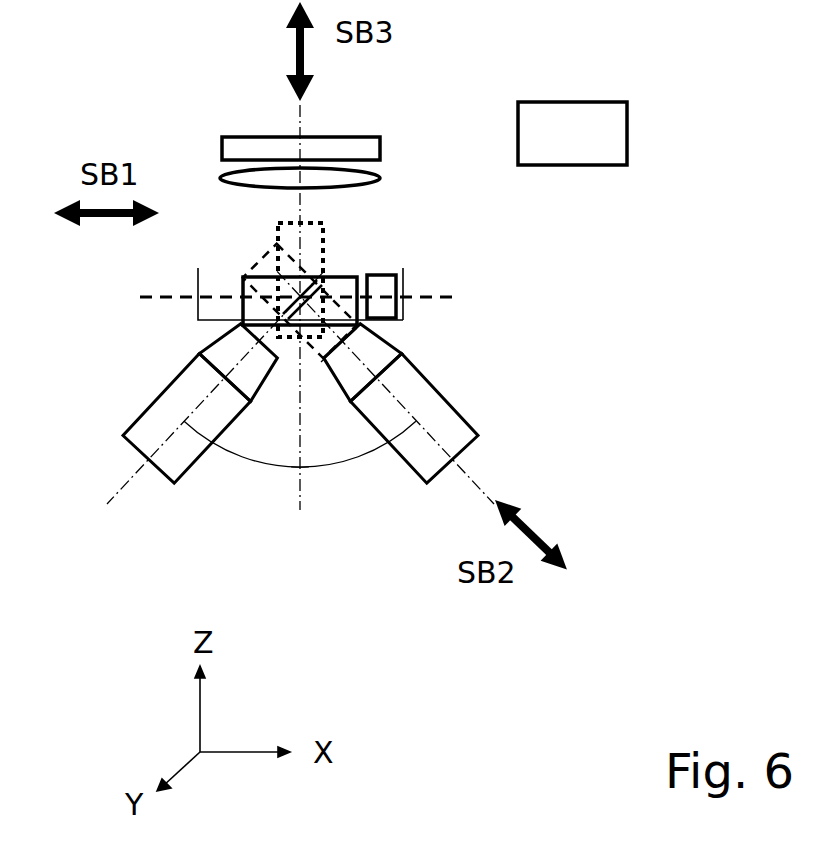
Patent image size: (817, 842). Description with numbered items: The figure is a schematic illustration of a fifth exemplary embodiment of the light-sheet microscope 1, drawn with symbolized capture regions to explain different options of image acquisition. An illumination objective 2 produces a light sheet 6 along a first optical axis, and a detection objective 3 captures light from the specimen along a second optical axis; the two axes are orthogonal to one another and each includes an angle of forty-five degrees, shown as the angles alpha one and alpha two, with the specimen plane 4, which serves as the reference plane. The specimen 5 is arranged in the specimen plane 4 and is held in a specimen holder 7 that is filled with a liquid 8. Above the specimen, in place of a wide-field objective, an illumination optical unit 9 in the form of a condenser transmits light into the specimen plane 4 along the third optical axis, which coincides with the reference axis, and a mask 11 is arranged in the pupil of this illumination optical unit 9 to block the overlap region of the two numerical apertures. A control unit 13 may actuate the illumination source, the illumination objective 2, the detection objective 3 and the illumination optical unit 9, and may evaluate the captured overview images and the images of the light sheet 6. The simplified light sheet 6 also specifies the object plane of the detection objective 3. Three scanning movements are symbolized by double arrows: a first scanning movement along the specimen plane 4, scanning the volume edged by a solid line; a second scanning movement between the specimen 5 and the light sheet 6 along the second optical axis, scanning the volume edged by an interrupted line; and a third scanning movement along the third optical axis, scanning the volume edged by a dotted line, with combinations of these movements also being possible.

The microscope 1 is at (178, 79).
The illumination objective 2 is at (197, 380).
The detection objective 3 is at (412, 380).
The specimen plane 4 is at (412, 292).
The specimen 5 is at (364, 310).
The light sheet 6 is at (277, 260).
The specimen holder 7 is at (198, 295).
The liquid 8 is at (207, 278).
The illumination optical unit 9 is at (378, 171).
The mask 11 is at (222, 149).
The control unit 13 is at (592, 149).